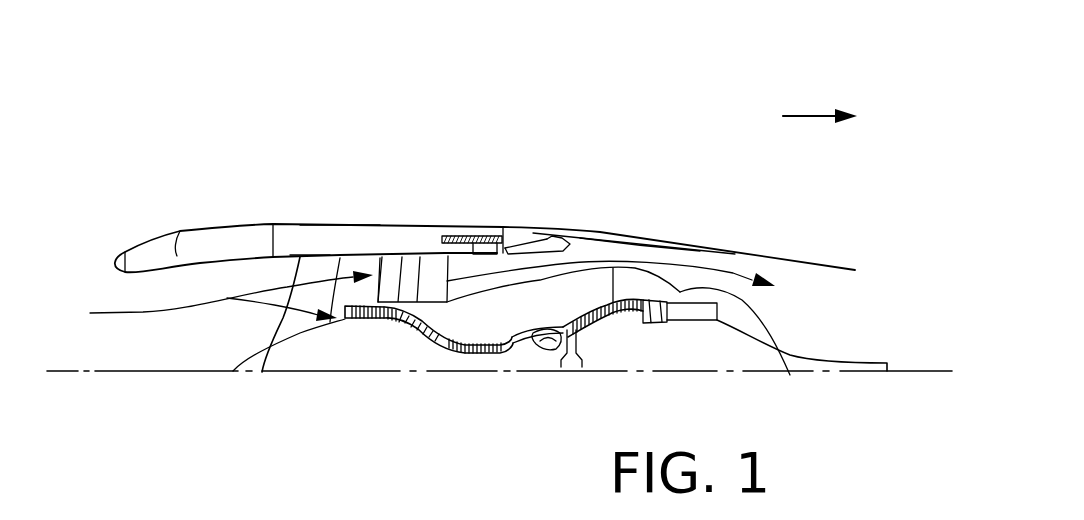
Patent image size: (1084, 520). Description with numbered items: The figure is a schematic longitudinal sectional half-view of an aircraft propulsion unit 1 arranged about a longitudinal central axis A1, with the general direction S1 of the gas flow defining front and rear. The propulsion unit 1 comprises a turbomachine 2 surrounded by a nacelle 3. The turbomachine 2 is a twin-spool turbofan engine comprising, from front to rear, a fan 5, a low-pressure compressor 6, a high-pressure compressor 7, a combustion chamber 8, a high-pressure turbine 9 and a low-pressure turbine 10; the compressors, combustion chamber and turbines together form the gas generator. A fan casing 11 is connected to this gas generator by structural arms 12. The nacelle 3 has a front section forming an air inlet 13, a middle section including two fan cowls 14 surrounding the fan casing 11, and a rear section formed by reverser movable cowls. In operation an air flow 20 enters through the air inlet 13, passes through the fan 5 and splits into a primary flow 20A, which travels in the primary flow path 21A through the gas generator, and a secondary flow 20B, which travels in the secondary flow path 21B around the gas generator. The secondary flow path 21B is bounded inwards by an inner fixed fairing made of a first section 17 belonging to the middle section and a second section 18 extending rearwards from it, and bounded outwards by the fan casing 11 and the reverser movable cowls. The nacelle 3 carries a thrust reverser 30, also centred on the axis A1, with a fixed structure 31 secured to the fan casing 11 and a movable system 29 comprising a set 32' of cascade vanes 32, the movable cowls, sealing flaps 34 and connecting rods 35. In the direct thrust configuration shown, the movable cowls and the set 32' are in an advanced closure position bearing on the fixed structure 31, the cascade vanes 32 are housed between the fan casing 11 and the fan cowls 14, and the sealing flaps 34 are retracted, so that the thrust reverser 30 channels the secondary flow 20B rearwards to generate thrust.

The aircraft propulsion unit 1 is at (112, 156).
The turbomachine 2 is at (833, 326).
The nacelle 3 is at (580, 72).
The fan 5 is at (262, 372).
The low-pressure compressor 6 is at (380, 332).
The high-pressure compressor 7 is at (466, 365).
The combustion chamber 8 is at (544, 366).
The high-pressure turbine 9 is at (606, 340).
The low-pressure turbine 10 is at (661, 338).
The fan casing 11 is at (340, 258).
The structural arms 12 is at (415, 258).
The air inlet 13 is at (177, 231).
The fan cowls 14 is at (383, 226).
The first section of the inner fixed fairing 17 is at (380, 258).
The second section of the inner fixed fairing 18 is at (790, 375).
The air flow 20 is at (143, 312).
The primary flow 20A is at (257, 303).
The secondary flow 20B is at (300, 257).
The primary flow path 21A is at (538, 277).
The secondary flow path 21B is at (633, 250).
The movable system 29 is at (650, 206).
The thrust reverser 30 is at (490, 182).
The fixed structure 31 is at (530, 250).
The cascade vanes 32 is at (418, 340).
The set of cascade vanes 32' is at (470, 208).
The sealing flaps 34 is at (567, 247).
The connecting rods 35 is at (523, 340).
The longitudinal central axis A1 is at (63, 373).
The general direction of gas flow S1 is at (817, 111).